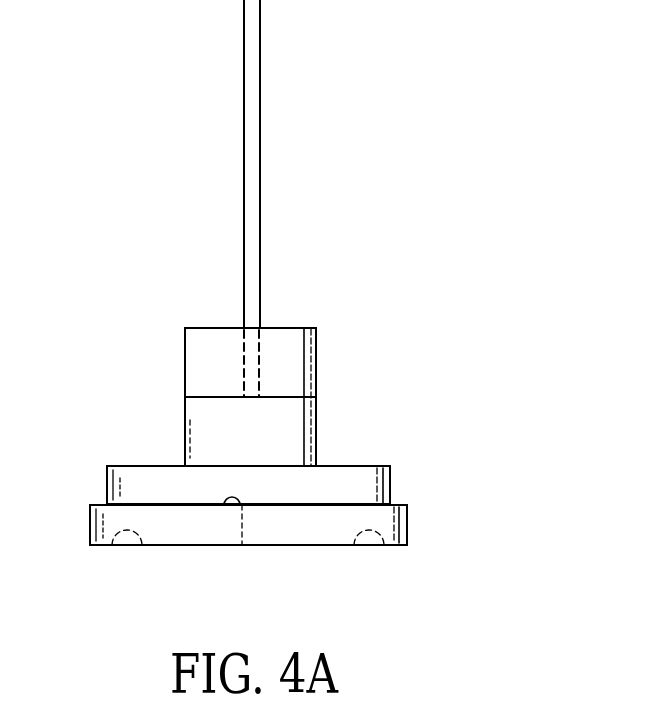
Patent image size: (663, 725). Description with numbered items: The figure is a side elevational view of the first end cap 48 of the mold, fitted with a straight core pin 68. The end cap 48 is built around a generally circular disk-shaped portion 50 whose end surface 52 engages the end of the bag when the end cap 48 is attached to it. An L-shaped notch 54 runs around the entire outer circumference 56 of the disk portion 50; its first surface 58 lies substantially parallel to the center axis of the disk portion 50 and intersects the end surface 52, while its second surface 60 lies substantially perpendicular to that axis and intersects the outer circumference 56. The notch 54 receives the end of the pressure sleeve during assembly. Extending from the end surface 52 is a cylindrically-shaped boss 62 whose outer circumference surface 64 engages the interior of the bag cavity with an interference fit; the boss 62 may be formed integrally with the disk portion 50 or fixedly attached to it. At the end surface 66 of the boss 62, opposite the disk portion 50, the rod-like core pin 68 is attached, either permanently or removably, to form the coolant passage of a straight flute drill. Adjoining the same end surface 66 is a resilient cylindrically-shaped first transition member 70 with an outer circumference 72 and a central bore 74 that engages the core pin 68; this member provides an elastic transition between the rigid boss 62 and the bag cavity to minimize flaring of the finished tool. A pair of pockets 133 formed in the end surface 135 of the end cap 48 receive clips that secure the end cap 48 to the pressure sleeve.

The first end cap 48 is at (282, 555).
The disk-shaped portion 50 is at (409, 523).
The end surface 52 is at (376, 466).
The L-shaped notch 54 is at (88, 466).
The outer circumference 56 is at (89, 523).
The first surface of notch 58 is at (392, 488).
The second surface of notch 60 is at (243, 506).
The cylindrically-shaped boss 62 is at (174, 451).
The outer circumference surface of boss 64 is at (318, 434).
The end surface of boss 66 is at (194, 396).
The core pin 68 is at (261, 164).
The first transition member 70 is at (211, 327).
The outer circumference of first transition member 72 is at (184, 345).
The bore 74 is at (259, 362).
The pockets 133 is at (127, 537).
The end surface of end cap 135 is at (196, 546).